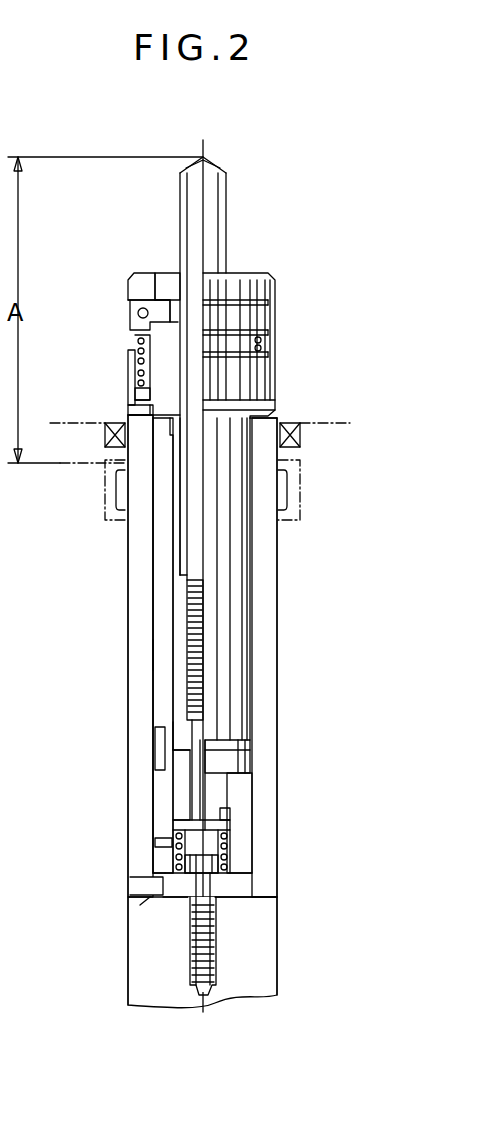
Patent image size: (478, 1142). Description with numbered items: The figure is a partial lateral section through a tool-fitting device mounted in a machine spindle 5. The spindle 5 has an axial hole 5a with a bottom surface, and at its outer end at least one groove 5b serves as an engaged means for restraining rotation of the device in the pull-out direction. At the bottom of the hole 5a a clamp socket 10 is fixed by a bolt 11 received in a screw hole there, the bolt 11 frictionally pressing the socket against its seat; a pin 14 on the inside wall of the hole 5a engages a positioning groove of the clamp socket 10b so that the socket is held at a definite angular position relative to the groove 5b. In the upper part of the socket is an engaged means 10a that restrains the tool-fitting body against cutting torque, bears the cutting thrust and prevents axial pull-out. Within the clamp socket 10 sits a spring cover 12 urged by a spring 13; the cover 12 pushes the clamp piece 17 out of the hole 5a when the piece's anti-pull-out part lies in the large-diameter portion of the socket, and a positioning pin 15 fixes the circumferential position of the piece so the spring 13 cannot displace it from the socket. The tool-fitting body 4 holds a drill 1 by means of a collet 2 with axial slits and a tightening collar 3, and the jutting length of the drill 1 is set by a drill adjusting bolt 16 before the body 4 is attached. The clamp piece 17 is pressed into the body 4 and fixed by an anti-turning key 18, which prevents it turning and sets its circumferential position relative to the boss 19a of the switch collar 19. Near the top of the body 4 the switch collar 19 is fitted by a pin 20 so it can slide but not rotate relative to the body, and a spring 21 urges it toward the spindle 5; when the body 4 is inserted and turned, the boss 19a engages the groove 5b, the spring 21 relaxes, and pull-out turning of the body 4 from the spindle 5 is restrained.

The drill 1 is at (190, 188).
The collet 2 is at (172, 273).
The tightening collar 3 is at (143, 273).
The tool-fitting body 4 is at (165, 550).
The spindle 5 is at (127, 575).
The axial hole 5a is at (163, 652).
The groove 5b is at (277, 405).
The clamp socket 10 is at (258, 840).
The engaged means 10a is at (252, 780).
The clamp socket 10b is at (130, 878).
The bolt 11 is at (218, 940).
The spring cover 12 is at (233, 862).
The spring 13 is at (232, 878).
The pin 14 is at (136, 905).
The positioning pin 15 is at (153, 847).
The drill adjusting bolt 16 is at (205, 595).
The clamp piece 17 is at (152, 785).
The anti-turning key 18 is at (153, 735).
The switch collar 19 is at (130, 362).
The boss 19a is at (128, 410).
The pin 20 is at (134, 391).
The spring 21 is at (137, 326).